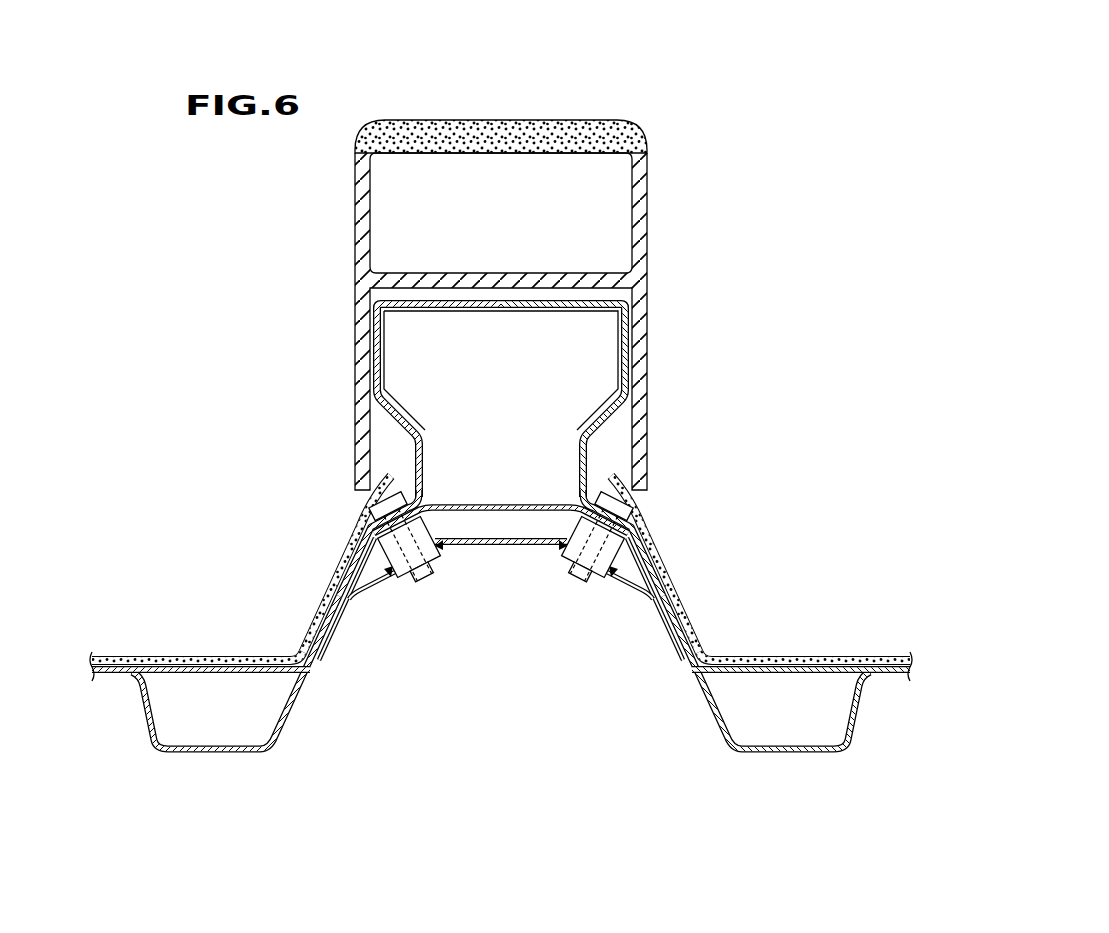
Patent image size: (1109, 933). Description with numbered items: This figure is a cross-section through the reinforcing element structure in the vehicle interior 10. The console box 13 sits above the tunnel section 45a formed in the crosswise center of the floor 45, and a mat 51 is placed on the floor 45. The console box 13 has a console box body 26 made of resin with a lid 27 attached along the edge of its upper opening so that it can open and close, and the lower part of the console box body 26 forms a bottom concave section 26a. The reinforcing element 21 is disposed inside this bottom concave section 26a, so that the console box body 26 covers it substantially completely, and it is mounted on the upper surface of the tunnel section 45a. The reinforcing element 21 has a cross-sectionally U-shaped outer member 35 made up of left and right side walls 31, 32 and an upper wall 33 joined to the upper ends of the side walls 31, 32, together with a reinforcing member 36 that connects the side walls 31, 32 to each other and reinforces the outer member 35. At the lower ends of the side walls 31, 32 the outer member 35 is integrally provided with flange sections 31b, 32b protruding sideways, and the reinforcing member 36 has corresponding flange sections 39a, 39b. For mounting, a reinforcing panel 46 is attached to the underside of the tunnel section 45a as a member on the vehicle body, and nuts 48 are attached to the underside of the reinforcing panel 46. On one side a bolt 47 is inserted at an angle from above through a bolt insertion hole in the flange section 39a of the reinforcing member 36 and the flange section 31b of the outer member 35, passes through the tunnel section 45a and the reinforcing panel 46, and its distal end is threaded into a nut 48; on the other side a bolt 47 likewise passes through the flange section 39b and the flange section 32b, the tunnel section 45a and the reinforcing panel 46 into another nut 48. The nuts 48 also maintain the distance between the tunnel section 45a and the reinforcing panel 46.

The vehicle interior 10 is at (797, 192).
The console box 13 is at (346, 211).
The reinforcing element 21 is at (368, 339).
The console box body 26 is at (641, 231).
The bottom concave section 26a is at (622, 443).
The lid 27 is at (500, 128).
The side wall 31 is at (375, 369).
The flange section 31b is at (357, 512).
The side wall 32 is at (628, 377).
The flange section 32b is at (650, 513).
The upper wall 33 is at (581, 300).
The outer member 35 is at (367, 350).
The reinforcing member 36 is at (582, 351).
The flange section 39a is at (343, 540).
The flange section 39b is at (660, 540).
The floor 45 is at (882, 686).
The tunnel section 45a is at (500, 500).
The reinforcing panel 46 is at (506, 548).
The bolt 47 is at (367, 497).
The nut 48 is at (397, 555).
The mat 51 is at (793, 654).